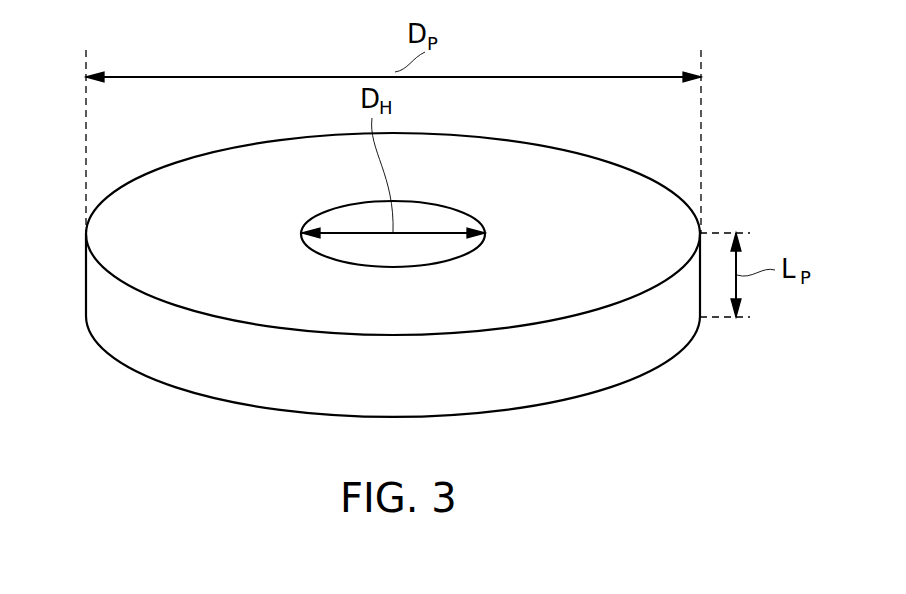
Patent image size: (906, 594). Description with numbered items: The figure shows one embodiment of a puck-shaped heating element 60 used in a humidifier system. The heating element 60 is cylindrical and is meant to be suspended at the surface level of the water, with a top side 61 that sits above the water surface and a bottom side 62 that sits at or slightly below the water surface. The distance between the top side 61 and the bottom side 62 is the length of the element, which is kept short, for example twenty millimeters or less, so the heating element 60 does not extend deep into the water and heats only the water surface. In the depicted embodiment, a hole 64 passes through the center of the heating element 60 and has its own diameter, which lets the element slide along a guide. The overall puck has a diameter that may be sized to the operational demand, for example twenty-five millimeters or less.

The heating element 60 is at (360, 276).
The top side 61 is at (458, 148).
The bottom side 62 is at (483, 415).
The hole 64 is at (443, 220).